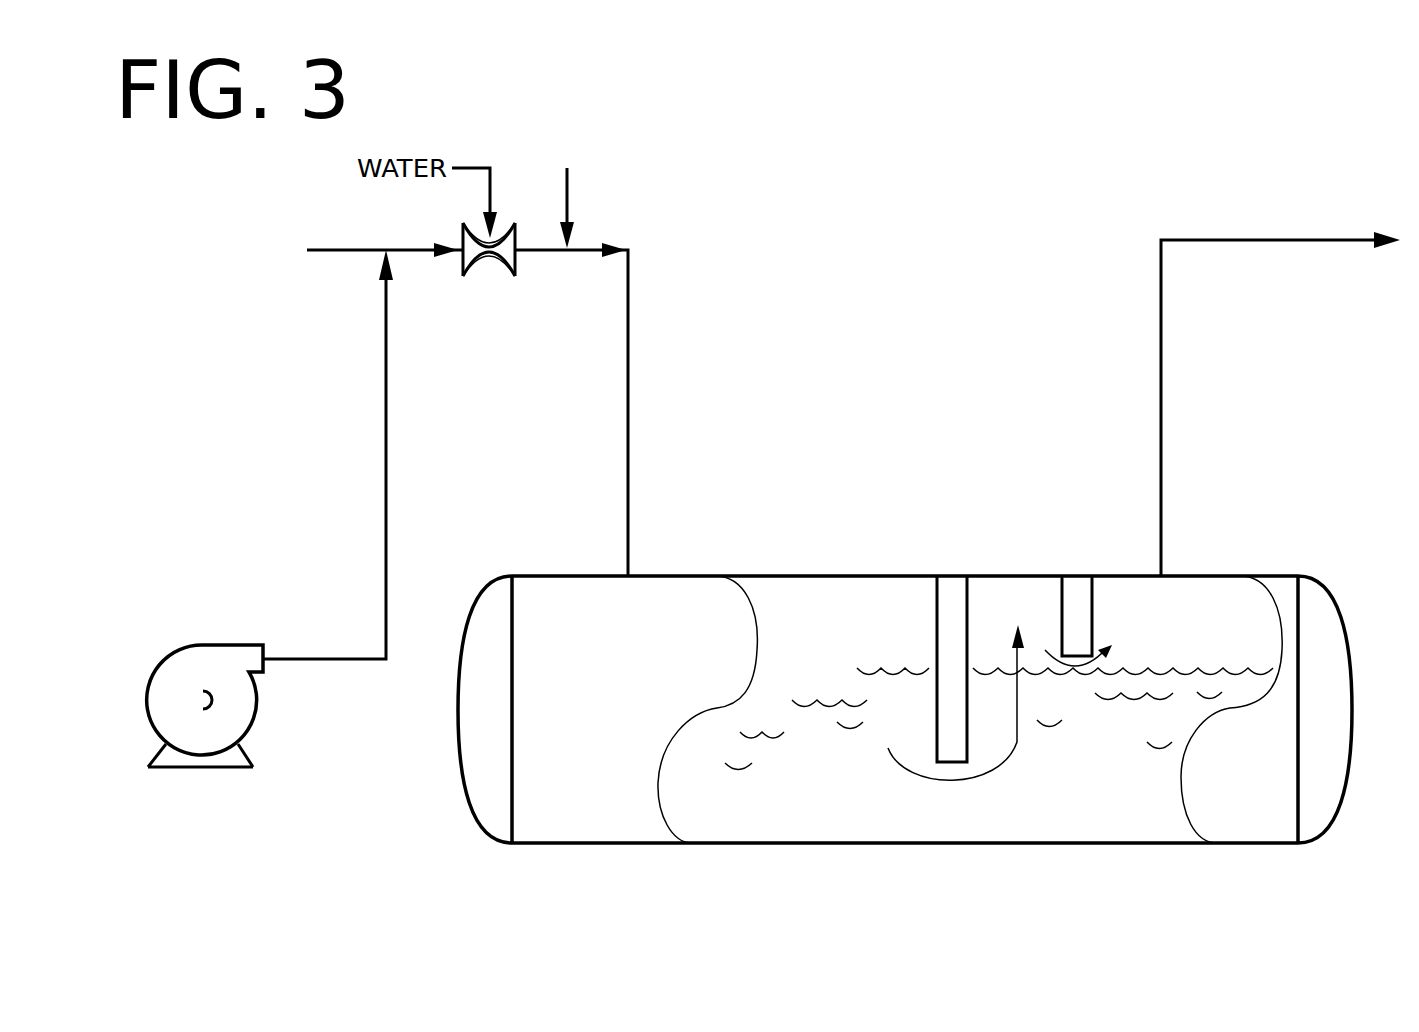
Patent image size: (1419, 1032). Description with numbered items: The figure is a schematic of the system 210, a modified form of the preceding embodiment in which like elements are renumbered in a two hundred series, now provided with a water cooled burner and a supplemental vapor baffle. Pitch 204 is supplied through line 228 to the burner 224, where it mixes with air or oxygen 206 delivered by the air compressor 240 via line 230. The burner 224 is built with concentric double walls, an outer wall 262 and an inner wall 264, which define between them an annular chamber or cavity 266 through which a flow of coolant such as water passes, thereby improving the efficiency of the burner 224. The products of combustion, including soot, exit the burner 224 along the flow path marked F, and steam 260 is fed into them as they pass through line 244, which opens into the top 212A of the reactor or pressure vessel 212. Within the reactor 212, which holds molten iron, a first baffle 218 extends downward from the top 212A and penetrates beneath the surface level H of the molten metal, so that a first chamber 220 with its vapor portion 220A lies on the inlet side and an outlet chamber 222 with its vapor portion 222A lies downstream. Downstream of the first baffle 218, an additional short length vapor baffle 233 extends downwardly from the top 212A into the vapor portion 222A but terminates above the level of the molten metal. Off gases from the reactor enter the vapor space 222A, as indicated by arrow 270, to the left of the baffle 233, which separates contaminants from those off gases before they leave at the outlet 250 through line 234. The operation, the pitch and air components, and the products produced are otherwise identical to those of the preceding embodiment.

The pitch 204 is at (222, 250).
The oxygen feed 206 is at (386, 405).
The oxidation system 210 is at (869, 331).
The reactor or pressure vessel 212 is at (548, 845).
The top 212A is at (650, 575).
The inlet dip tube 218 is at (937, 617).
The first zone 220 is at (762, 825).
The first zone vapor space 220A is at (826, 615).
The outlet chamber 222 is at (1122, 823).
The vapor portion 222A is at (1198, 627).
The burner 224 is at (472, 272).
The pitch feed line 228 is at (385, 239).
The oxygen supply line 230 is at (386, 515).
The outlet tube 233 is at (1062, 618).
The line 234 is at (1161, 352).
The pump 240 is at (235, 717).
The feed line to vessel 244 is at (628, 403).
The outlet 250 is at (1162, 575).
The steam inlet 260 is at (616, 194).
The outer wall 262 is at (508, 227).
The inner wall 264 is at (500, 253).
The annular chamber or cavity 266 is at (465, 230).
The arrow 270 is at (1017, 742).
The flow F is at (525, 252).
The liquid level H is at (850, 782).